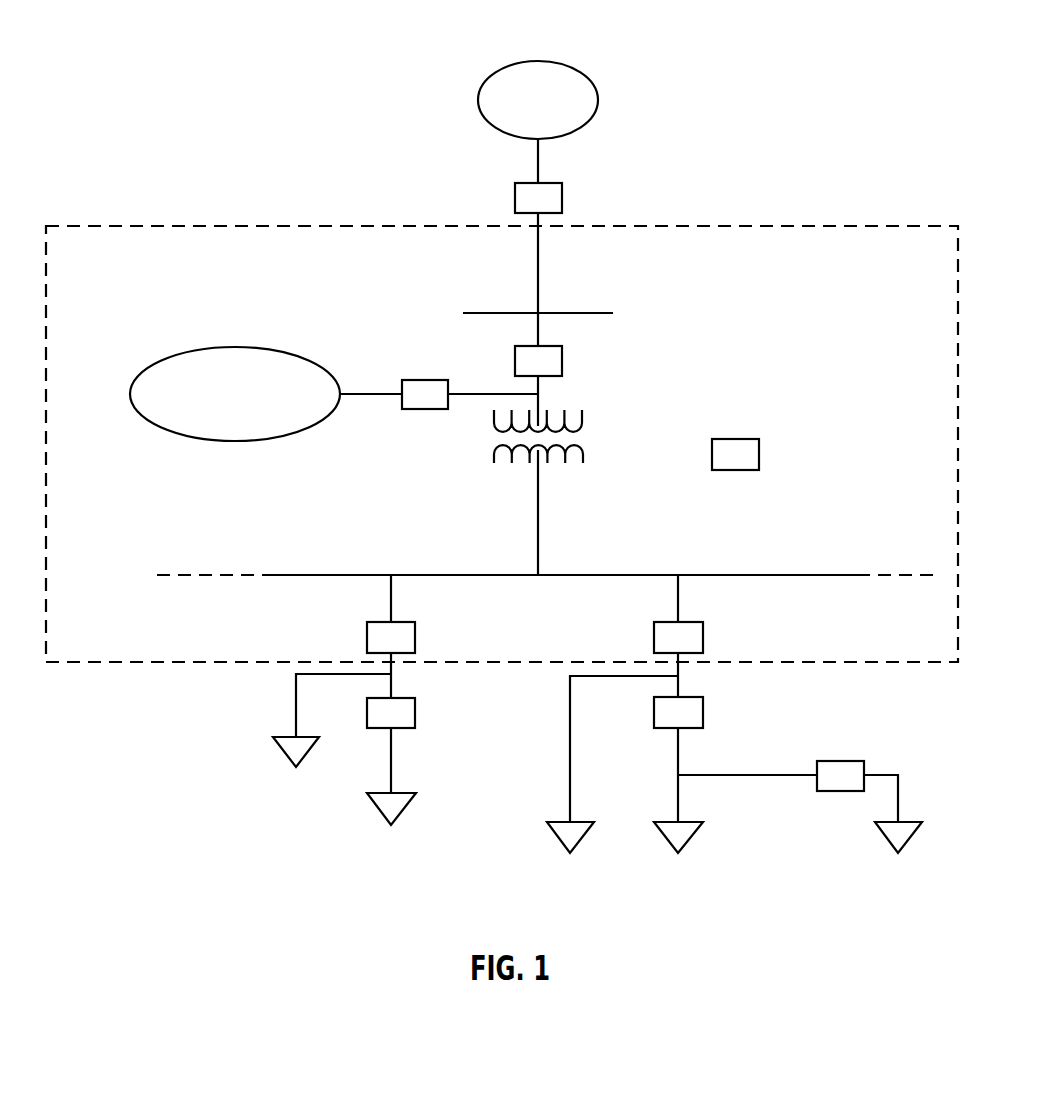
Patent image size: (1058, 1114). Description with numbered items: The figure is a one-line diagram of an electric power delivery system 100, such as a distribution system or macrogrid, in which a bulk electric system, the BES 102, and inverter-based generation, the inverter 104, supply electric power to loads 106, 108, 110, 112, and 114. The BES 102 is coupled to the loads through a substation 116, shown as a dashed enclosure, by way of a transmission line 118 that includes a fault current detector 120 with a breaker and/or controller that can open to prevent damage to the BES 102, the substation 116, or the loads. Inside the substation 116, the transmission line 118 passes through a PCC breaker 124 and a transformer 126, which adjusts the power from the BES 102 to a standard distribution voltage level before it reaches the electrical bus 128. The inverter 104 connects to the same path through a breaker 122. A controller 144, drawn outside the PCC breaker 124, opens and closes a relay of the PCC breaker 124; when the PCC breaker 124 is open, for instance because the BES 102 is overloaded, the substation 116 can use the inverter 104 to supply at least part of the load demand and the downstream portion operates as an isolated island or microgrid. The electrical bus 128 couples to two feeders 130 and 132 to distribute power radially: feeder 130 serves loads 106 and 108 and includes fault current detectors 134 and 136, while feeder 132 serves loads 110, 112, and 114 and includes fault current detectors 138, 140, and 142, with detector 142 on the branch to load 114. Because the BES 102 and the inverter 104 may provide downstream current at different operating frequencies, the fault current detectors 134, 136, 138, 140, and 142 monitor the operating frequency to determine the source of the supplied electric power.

The electric power delivery system 100 is at (377, 29).
The BES 102 is at (573, 93).
The inverter 104 is at (266, 390).
The load 106 is at (294, 731).
The load 108 is at (354, 818).
The load 110 is at (599, 792).
The load 112 is at (665, 865).
The load 114 is at (885, 842).
The substation 116 is at (502, 411).
The transmission line 118 is at (540, 240).
The fault current detector 120 is at (581, 188).
The breaker 122 is at (461, 431).
The PCC breaker 124 is at (583, 372).
The transformer 126 is at (582, 475).
The electrical bus 128 is at (548, 541).
The feeder 130 is at (435, 684).
The feeder 132 is at (722, 698).
The fault current detector 134 is at (435, 633).
The fault current detector 136 is at (435, 703).
The fault current detector 138 is at (721, 633).
The fault current detector 140 is at (721, 704).
The fault current detector 142 is at (780, 742).
The controller 144 is at (779, 445).